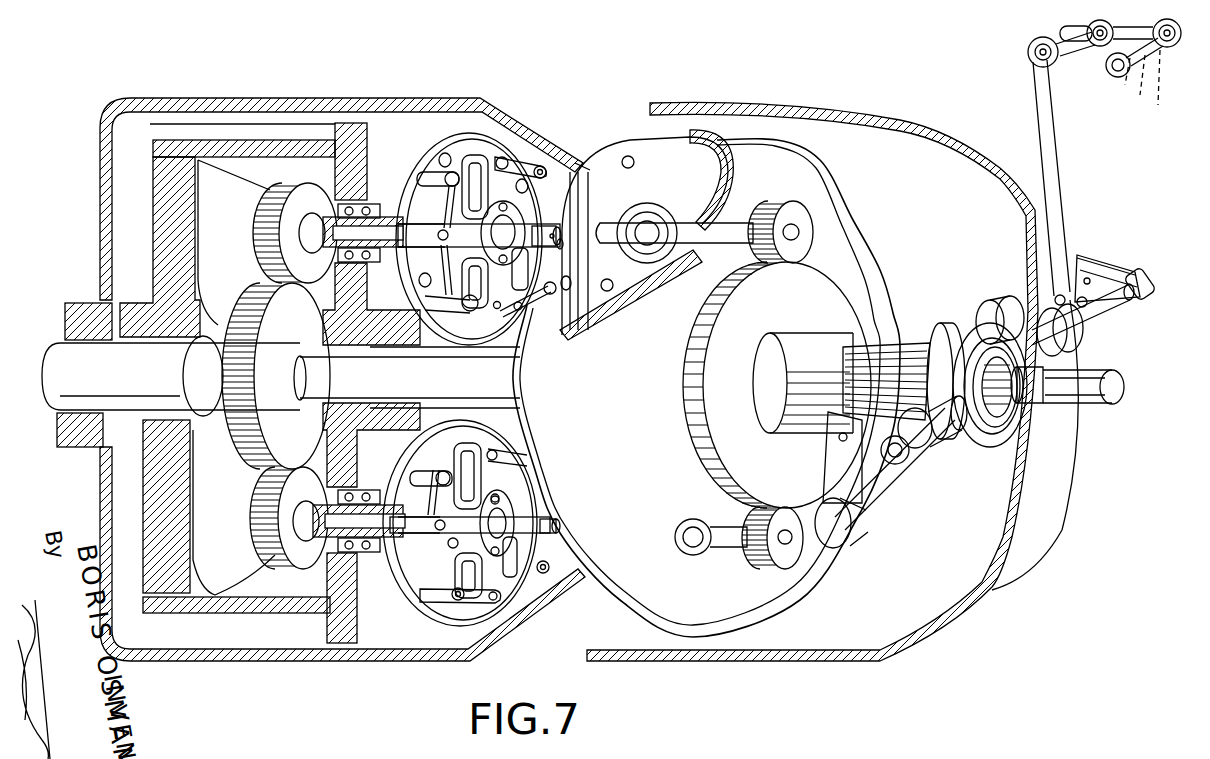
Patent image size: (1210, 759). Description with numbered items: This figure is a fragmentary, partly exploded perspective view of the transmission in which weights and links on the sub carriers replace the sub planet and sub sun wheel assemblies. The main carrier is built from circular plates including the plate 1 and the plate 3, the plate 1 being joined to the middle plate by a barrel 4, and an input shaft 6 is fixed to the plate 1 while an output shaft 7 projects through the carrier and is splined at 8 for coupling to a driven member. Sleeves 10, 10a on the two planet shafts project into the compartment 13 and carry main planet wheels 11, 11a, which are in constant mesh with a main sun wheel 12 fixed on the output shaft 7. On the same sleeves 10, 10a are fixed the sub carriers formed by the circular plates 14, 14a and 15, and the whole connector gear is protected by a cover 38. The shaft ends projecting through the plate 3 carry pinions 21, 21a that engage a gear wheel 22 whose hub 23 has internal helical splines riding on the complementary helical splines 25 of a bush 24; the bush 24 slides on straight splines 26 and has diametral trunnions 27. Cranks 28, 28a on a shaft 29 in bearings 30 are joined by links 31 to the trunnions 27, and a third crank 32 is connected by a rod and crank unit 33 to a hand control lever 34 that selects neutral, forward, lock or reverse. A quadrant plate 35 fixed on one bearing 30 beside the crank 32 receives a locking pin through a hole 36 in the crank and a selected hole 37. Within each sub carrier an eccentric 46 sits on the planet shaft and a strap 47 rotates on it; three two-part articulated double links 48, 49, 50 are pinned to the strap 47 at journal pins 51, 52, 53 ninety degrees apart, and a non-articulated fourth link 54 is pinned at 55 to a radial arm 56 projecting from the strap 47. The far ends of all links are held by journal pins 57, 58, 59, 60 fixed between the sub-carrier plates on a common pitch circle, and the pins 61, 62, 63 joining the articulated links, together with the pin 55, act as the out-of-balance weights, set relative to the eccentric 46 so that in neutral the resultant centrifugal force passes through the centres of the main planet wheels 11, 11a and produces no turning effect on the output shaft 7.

The circular plate 1 is at (153, 195).
The circular plate 3 is at (604, 413).
The barrel 4 is at (280, 134).
The input shaft 6 is at (133, 377).
The output shaft 7 is at (1108, 400).
The splines 8 is at (1050, 399).
The sleeve 10 is at (372, 266).
The sleeve 10a is at (396, 490).
The main planet wheel 11 is at (260, 261).
The main planet wheel 11a is at (262, 494).
The main sun wheel 12 is at (250, 305).
The compartment 13 is at (207, 166).
The sub carrier plate 14 is at (462, 136).
The sub carrier plate 14a is at (651, 137).
The sub carrier plate 15 is at (403, 461).
The pinion 21 is at (800, 206).
The pinion 21a is at (778, 568).
The gear wheel 22 is at (683, 386).
The hub 23 is at (765, 387).
The bush 24 is at (935, 351).
The helical splines 25 is at (898, 350).
The straight splines 26 is at (995, 428).
The trunnions 27 is at (948, 448).
The crank 28 is at (830, 469).
The crank 28a is at (980, 316).
The shaft 29 is at (890, 488).
The bearing 30 is at (1150, 278).
The link 31 is at (883, 453).
The third crank 32 is at (1080, 256).
The rod and crank unit 33 is at (1050, 102).
The hand control lever 34 is at (1157, 52).
The quadrant plate 35 is at (1140, 266).
The hole 36 is at (1095, 326).
The hole 37 is at (1092, 277).
The cover 38 is at (283, 99).
The eccentric 46 is at (490, 238).
The strap 47 is at (517, 264).
The articulated double link 48 is at (522, 307).
The articulated double link 49 is at (563, 245).
The articulated double link 50 is at (482, 152).
The journal pin 51 is at (495, 310).
The journal pin 52 is at (450, 543).
The journal pin 53 is at (508, 208).
The fourth link 54 is at (412, 212).
The journal pin 55 is at (437, 242).
The radial arm 56 is at (458, 258).
The journal pin 57 is at (466, 313).
The journal pin 58 is at (552, 295).
The journal pin 59 is at (545, 173).
The journal pin 60 is at (432, 175).
The journal pin 61 is at (514, 318).
The journal pin 62 is at (558, 228).
The journal pin 63 is at (509, 160).